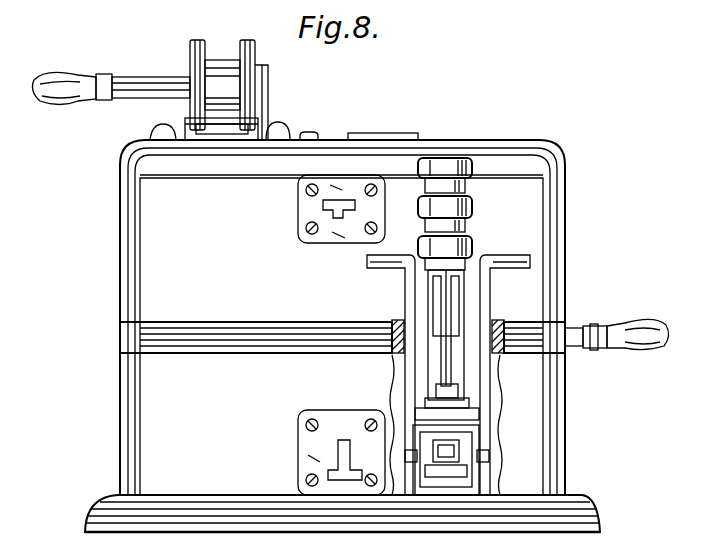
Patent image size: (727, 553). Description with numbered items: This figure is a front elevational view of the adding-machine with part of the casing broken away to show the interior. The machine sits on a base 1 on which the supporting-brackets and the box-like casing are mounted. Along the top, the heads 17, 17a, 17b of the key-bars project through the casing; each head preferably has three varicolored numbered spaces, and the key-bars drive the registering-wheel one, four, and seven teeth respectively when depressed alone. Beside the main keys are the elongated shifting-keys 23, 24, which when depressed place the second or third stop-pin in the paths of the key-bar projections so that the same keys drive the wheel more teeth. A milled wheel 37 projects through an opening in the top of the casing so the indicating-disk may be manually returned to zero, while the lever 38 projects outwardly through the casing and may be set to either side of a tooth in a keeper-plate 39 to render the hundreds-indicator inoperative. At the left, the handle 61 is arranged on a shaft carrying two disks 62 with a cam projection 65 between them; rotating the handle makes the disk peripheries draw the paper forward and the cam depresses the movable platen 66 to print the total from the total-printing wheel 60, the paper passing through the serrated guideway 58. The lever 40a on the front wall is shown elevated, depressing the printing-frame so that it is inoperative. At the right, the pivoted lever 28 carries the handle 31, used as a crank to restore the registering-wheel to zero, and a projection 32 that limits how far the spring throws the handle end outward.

The base 1 is at (132, 515).
The total-printing wheel 60 is at (342, 337).
The handle 61 is at (62, 104).
The disks 62 is at (196, 40).
The cam projection 65 is at (222, 85).
The movable platen 66 is at (218, 134).
The serrated guideway 58 is at (234, 136).
The milled wheel 37 is at (312, 134).
The head 17 is at (453, 168).
The head 17a is at (474, 207).
The head 17b is at (475, 245).
The lever 38 is at (320, 220).
The keeper-plate 39 is at (342, 218).
The shifting-key 23 is at (405, 296).
The shifting-key 24 is at (508, 268).
The lever 40a is at (335, 482).
The pivoted lever 28 is at (598, 326).
The handle 31 is at (658, 338).
The projection 32 is at (582, 346).